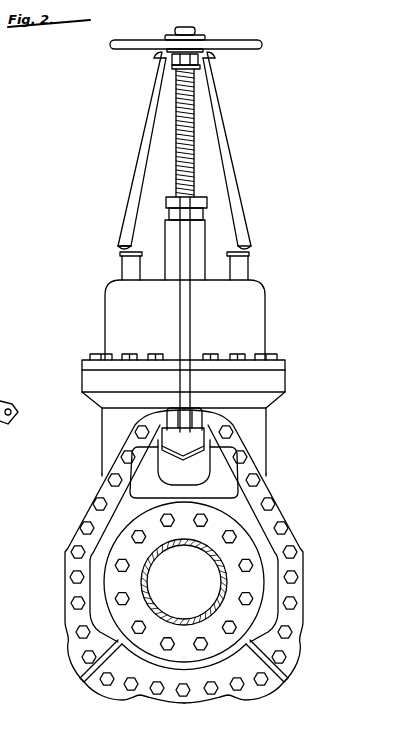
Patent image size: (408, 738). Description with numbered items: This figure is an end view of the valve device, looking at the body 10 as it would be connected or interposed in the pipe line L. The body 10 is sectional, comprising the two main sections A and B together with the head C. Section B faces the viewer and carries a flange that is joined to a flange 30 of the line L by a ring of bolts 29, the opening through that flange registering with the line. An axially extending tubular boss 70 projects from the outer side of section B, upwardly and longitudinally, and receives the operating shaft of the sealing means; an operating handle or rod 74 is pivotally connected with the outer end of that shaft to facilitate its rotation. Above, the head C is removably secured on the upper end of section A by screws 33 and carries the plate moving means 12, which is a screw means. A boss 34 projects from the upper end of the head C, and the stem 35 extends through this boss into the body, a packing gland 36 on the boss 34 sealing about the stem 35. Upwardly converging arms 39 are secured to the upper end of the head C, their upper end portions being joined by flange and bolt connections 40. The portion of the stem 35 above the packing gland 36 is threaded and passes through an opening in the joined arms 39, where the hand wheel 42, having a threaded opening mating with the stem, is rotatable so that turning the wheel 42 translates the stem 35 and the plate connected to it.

The hand wheel 42 is at (128, 45).
The flange and bolt connections 40 is at (201, 60).
The arms 39 is at (223, 100).
The stem 35 is at (197, 118).
The means for moving the plate 12 is at (196, 140).
The packing gland 36 is at (207, 205).
The boss 34 is at (200, 226).
The head C is at (268, 315).
The operating handle 74 is at (184, 316).
The screws 33 is at (282, 356).
The body section A is at (265, 422).
The body 10 is at (260, 440).
The body section B is at (248, 530).
The bolts 29 is at (162, 514).
The flange 30 is at (216, 514).
The tubular boss 70 is at (167, 440).
The pipe line L is at (142, 578).